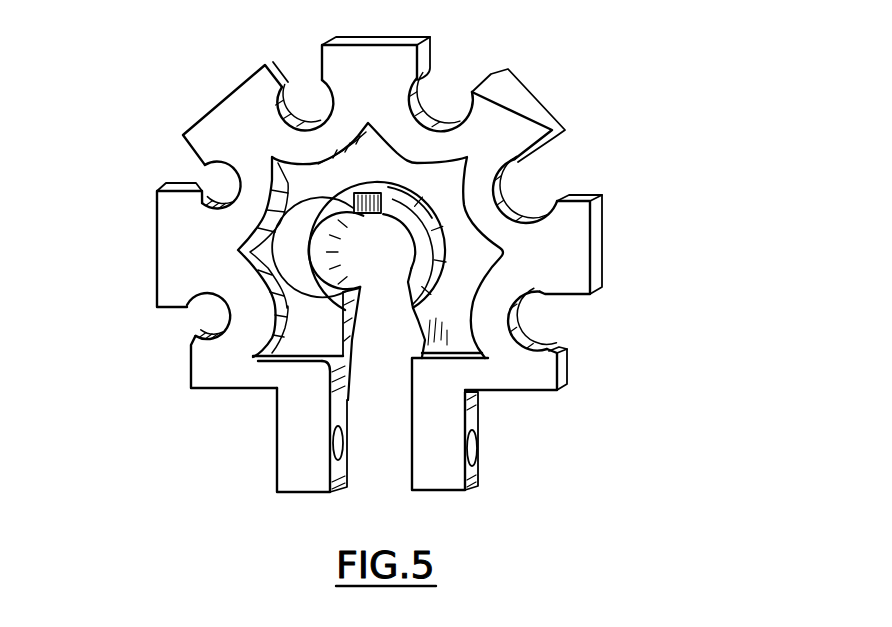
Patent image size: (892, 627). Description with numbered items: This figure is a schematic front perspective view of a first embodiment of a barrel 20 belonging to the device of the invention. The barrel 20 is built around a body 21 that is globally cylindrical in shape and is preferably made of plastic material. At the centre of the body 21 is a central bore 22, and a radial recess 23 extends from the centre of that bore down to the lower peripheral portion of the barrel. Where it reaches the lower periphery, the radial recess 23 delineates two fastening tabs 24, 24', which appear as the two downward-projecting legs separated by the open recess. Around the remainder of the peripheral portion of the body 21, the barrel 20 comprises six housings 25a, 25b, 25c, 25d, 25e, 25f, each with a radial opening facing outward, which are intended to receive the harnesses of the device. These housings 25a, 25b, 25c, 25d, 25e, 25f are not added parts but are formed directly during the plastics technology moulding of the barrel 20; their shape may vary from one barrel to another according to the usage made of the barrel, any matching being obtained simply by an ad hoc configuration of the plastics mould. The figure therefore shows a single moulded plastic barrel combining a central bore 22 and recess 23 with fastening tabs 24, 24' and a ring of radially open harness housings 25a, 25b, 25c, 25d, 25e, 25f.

The barrel 20 is at (572, 91).
The body 21 is at (557, 258).
The central bore 22 is at (330, 264).
The radial recess 23 is at (392, 340).
The fastening tab 24 is at (270, 426).
The fastening tab 24' is at (491, 434).
The housing 25a is at (226, 311).
The housing 25b is at (233, 192).
The housing 25c is at (318, 122).
The housing 25d is at (433, 105).
The housing 25e is at (513, 193).
The housing 25f is at (520, 313).